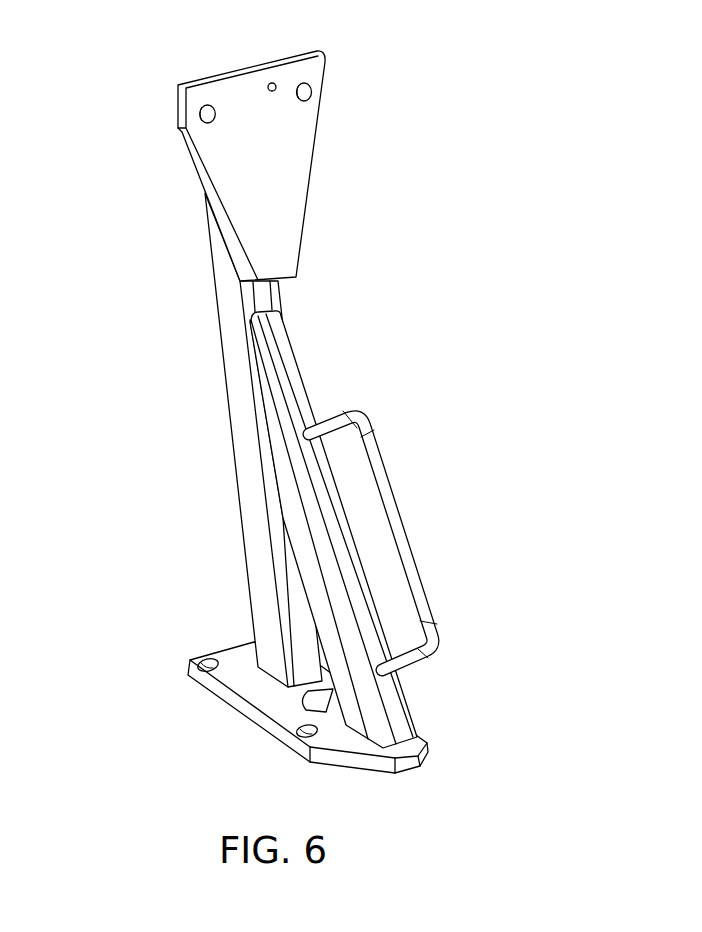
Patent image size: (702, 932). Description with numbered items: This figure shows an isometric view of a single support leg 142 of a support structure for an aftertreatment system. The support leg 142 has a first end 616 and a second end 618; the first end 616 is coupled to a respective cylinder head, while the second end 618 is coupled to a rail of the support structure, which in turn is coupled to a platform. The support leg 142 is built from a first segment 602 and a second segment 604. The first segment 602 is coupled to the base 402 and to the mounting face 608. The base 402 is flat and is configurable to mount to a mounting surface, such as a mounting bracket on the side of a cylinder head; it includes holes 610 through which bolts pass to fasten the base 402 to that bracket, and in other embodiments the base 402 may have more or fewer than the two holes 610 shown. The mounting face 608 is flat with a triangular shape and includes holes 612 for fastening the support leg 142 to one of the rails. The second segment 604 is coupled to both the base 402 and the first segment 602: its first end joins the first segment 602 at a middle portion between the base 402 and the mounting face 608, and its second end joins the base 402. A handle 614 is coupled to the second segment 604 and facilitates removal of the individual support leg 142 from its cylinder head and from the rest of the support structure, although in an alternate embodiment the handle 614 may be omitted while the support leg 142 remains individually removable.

The support leg 142 is at (305, 396).
The base 402 is at (282, 700).
The first segment 602 is at (223, 416).
The second segment 604 is at (285, 468).
The mounting face 608 is at (290, 170).
The holes 610 is at (208, 658).
The holes 612 is at (198, 113).
The handle 614 is at (415, 580).
The first end 616 is at (461, 723).
The second end 618 is at (150, 188).